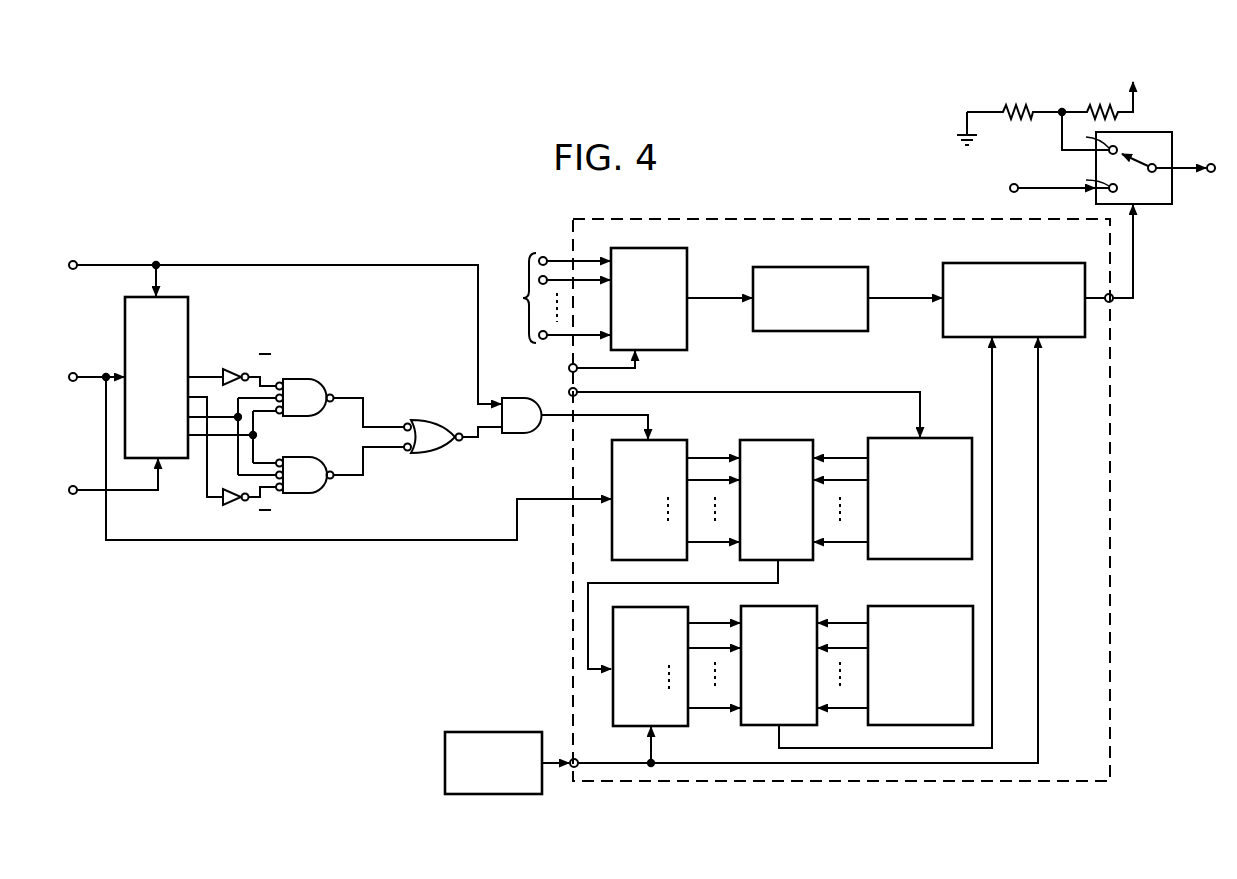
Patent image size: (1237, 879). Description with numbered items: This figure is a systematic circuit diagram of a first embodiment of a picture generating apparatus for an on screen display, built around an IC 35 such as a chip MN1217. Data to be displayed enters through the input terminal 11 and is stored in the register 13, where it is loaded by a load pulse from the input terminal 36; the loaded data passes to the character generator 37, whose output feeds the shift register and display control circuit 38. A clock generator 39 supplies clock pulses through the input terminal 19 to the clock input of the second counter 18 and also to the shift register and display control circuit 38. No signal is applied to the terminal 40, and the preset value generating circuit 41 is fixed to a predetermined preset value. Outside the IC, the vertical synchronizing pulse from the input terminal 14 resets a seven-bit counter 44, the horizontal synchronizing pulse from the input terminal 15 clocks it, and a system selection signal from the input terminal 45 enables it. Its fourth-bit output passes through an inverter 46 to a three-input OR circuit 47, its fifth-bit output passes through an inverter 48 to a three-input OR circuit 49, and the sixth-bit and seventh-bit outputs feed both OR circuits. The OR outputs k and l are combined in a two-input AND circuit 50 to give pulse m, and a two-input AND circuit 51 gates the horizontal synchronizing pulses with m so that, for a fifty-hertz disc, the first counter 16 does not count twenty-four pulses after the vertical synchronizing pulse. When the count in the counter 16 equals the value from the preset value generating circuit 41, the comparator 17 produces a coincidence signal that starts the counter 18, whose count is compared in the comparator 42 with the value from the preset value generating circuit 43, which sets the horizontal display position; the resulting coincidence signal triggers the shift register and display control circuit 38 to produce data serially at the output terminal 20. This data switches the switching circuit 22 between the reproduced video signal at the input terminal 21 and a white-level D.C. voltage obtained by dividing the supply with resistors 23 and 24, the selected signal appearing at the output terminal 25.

The input terminal 11 is at (554, 298).
The register 13 is at (688, 253).
The input terminal 14 is at (73, 373).
The input terminal 15 is at (73, 261).
The first counter 16 is at (611, 460).
The comparator 17 is at (775, 439).
The second counter 18 is at (612, 690).
The input terminal 19 is at (571, 758).
The output terminal 20 is at (1112, 302).
The input terminal 21 is at (1014, 184).
The switching circuit 22 is at (1172, 132).
The resistor 23 is at (1097, 110).
The resistor 24 is at (1012, 110).
The output terminal 25 is at (1211, 172).
The IC 35 is at (1128, 462).
The input terminal 36 is at (570, 366).
The character generator 37 is at (806, 266).
The shift register and display control circuit 38 is at (1002, 262).
The clock generator 39 is at (486, 731).
The terminal 40 is at (569, 391).
The preset value generating circuit 41 is at (940, 437).
The comparator 42 is at (788, 605).
The preset value generating circuit 43 is at (932, 605).
The 7-bit counter 44 is at (189, 299).
The input terminal 45 is at (73, 486).
The inverter 46 is at (231, 367).
The 3-input OR circuit 47 is at (310, 378).
The inverter 48 is at (220, 504).
The 3-input OR circuit 49 is at (308, 457).
The 2-input AND circuit 50 is at (430, 420).
The 2-input AND circuit 51 is at (514, 397).